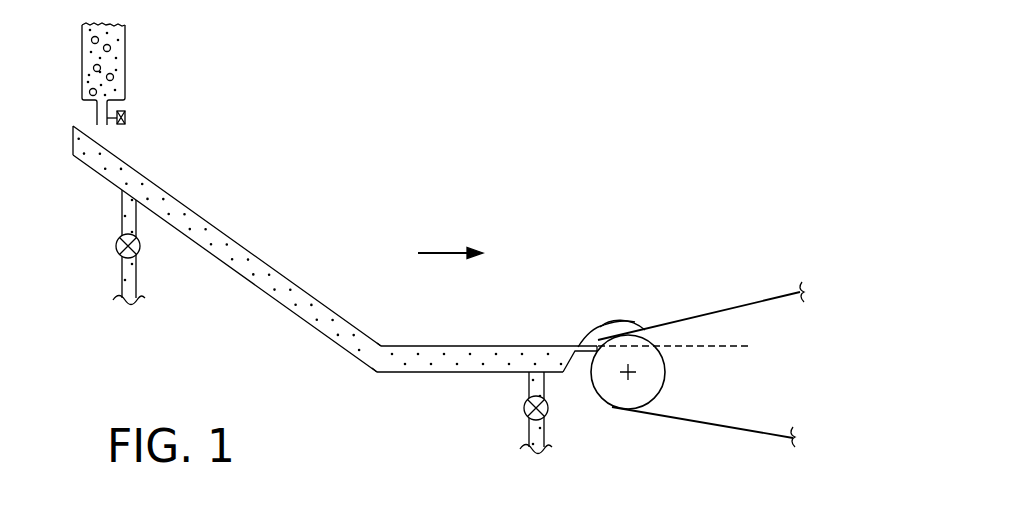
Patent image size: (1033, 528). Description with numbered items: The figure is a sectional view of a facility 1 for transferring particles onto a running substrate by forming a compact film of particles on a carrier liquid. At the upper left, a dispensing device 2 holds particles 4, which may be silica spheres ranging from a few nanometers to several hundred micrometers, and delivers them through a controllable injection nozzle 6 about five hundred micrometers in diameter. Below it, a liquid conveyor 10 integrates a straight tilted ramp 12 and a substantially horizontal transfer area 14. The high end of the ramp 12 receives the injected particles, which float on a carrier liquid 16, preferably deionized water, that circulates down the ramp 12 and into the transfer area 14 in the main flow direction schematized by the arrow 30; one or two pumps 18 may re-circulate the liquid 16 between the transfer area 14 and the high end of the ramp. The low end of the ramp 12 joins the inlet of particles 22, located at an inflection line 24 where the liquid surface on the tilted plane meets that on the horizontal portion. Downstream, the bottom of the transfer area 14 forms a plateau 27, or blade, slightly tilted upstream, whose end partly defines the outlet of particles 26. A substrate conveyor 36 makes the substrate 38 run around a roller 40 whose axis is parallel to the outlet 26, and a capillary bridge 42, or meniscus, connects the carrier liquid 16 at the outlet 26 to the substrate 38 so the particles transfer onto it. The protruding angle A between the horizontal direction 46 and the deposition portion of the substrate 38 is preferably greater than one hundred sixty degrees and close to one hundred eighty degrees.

The facility 1 is at (259, 186).
The dispensing device 2 is at (134, 71).
The particles 4 is at (108, 48).
The controllable injection nozzle 6 is at (126, 113).
The liquid conveyor 10 is at (363, 390).
The tilted ramp 12 is at (251, 282).
The transfer area 14 is at (477, 385).
The carrier liquid 16 is at (290, 301).
The pump 18 is at (139, 251).
The inlet of particles 22 is at (382, 358).
The inflection line 24 is at (385, 347).
The outlet of particles 26 is at (597, 338).
The plateau 27 is at (575, 349).
The arrow 30 is at (445, 252).
The substrate conveyor 36 is at (684, 427).
The substrate 38 is at (730, 433).
The roller 40 is at (613, 409).
The capillary bridge 42 is at (604, 336).
The horizontal direction 46 is at (679, 346).
The protruding angle A is at (634, 322).